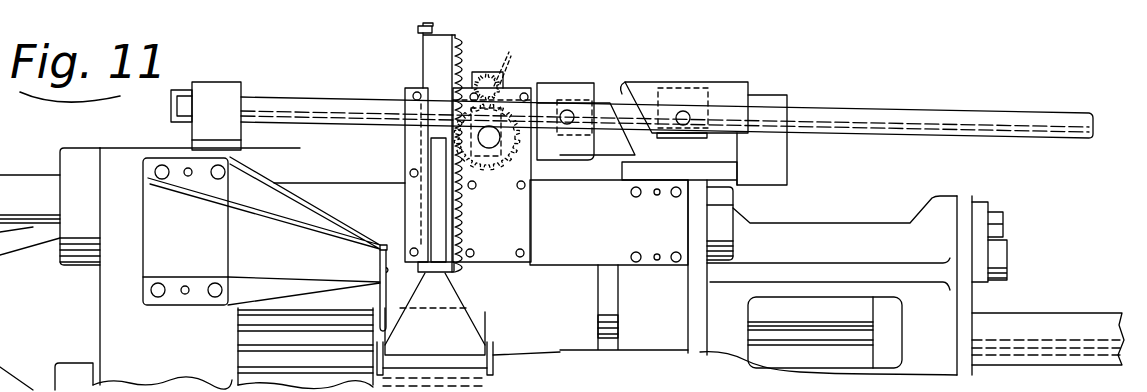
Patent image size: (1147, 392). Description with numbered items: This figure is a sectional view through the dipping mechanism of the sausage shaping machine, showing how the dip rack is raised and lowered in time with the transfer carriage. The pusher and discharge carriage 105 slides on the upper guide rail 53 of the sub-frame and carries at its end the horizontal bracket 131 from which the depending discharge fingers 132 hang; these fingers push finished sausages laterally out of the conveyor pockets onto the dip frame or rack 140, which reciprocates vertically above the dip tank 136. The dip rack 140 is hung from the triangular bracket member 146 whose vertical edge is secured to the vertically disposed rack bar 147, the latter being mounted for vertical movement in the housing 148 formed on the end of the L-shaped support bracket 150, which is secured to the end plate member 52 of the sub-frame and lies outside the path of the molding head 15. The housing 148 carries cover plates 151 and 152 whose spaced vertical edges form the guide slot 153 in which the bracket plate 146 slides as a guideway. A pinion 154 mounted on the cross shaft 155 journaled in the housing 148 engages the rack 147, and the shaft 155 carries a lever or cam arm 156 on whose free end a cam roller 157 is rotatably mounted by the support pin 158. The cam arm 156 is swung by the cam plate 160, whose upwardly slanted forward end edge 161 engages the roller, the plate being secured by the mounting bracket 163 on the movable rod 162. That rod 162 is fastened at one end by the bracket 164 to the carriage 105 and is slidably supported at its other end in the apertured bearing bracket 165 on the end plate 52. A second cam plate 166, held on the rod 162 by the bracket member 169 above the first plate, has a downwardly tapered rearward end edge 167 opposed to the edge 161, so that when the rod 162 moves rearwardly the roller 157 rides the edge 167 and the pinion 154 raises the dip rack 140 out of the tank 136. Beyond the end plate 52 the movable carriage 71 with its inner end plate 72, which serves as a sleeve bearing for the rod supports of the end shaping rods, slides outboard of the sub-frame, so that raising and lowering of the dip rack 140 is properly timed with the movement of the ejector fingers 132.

The molding head 15 is at (552, 310).
The end plate member 52 is at (650, 350).
The guide rail forming member 53 is at (322, 186).
The movable frame or carriage 71 is at (1031, 374).
The inner end plate 72 is at (875, 353).
The carriage forming member 105 is at (143, 269).
The bracket 131 is at (248, 253).
The discharge fingers 132 is at (380, 300).
The tank 136 is at (493, 365).
The dip frame or rack 140 is at (455, 298).
The bracket member 146 is at (437, 217).
The rack bar 147 is at (432, 62).
The housing 148 is at (503, 210).
The support bracket 150 is at (612, 230).
The cover plate 151 is at (531, 213).
The cover plate 152 is at (410, 173).
The guide slot 153 is at (428, 128).
The pinion 154 is at (487, 149).
The cross shaft 155 is at (496, 141).
The lever or cam arm 156 is at (504, 80).
The cam roller 157 is at (486, 75).
The support pin 158 is at (500, 60).
The cam plate 160 is at (636, 148).
The forward end edge 161 is at (612, 103).
The movable bar or rod 162 is at (336, 78).
The mounting bracket 163 is at (578, 90).
The bracket 164 is at (228, 88).
The apertured bearing bracket 165 is at (778, 103).
The second cam plate 166 is at (745, 82).
The rearward end edge 167 is at (637, 78).
The bracket member 169 is at (680, 90).